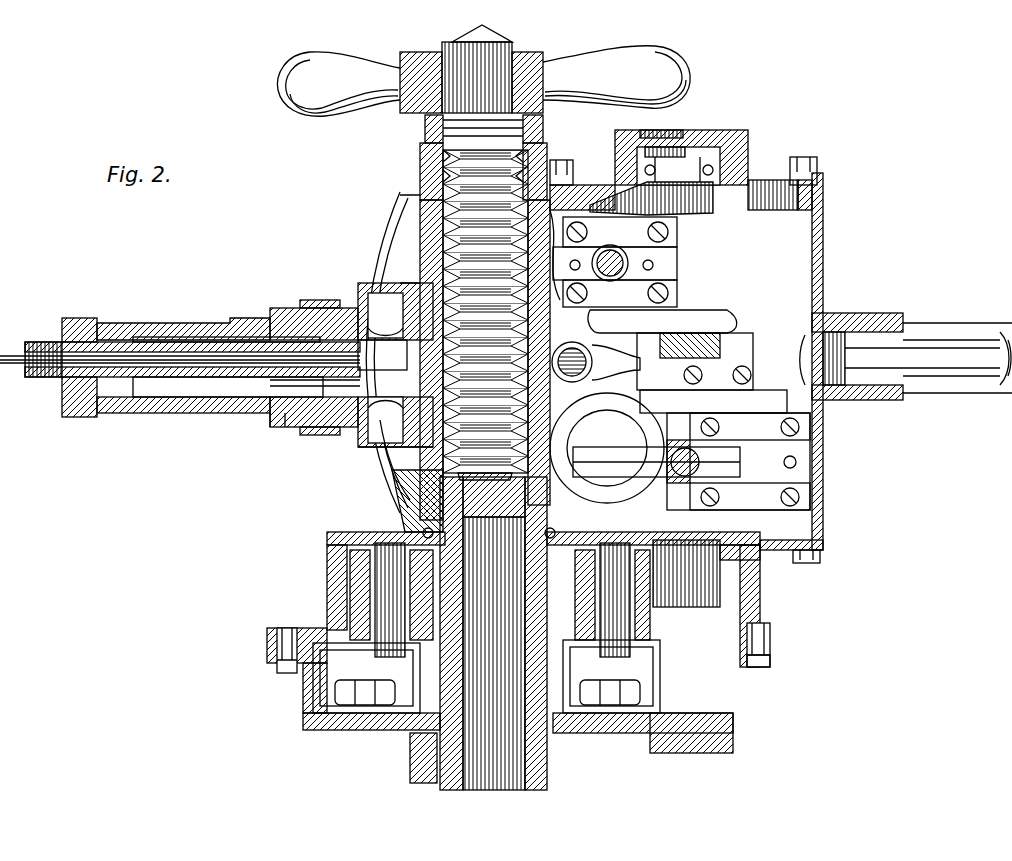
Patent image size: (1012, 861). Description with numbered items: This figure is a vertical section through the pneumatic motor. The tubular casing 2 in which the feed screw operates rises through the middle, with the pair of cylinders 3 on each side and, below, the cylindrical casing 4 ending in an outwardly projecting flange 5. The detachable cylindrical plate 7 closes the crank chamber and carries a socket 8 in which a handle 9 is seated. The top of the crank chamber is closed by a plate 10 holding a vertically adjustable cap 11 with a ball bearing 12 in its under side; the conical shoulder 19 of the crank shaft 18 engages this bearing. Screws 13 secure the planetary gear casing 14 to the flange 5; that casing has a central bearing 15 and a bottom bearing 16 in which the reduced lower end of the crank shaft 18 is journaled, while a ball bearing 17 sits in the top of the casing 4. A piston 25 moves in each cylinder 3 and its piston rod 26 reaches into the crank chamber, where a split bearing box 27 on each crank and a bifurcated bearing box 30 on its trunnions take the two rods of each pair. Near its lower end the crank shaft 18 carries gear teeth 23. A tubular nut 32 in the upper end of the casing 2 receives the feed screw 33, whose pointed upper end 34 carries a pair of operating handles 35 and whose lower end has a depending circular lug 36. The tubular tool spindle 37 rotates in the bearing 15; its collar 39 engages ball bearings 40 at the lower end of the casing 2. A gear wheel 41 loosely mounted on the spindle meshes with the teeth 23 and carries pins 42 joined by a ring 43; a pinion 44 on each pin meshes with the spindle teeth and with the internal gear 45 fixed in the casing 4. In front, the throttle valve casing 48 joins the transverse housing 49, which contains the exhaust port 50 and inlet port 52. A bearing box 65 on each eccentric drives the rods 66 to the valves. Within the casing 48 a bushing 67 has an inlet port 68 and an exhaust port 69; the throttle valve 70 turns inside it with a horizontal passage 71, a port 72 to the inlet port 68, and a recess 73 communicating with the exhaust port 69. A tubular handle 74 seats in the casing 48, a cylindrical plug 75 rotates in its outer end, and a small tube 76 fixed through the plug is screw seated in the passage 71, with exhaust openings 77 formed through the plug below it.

The tubular casing 2 is at (395, 245).
The cylinders 3 is at (958, 340).
The cylindrical casing 4 is at (340, 566).
The flange 5 is at (270, 643).
The cylindrical plate 7 is at (823, 215).
The socket 8 is at (855, 315).
The handle 9 is at (984, 382).
The plate 10 is at (760, 180).
The vertically adjustable cap 11 is at (690, 150).
The ball bearing 12 is at (735, 150).
The screws 13 is at (765, 665).
The planetary gear casing 14 is at (320, 730).
The bearing 15 is at (415, 752).
The bearing 16 is at (655, 740).
The ball bearing 17 is at (760, 570).
The crank shaft 18 is at (686, 573).
The conical shoulder 19 is at (670, 185).
The gear teeth 23 is at (720, 693).
The piston 25 is at (607, 448).
The piston rod 26 is at (620, 258).
The split bearing box 27 is at (640, 274).
The bifurcated bearing box 30 is at (686, 363).
The tubular nut 32 is at (438, 128).
The feed screw 33 is at (455, 160).
The pointed upper end 34 is at (492, 40).
The operating handles 35 is at (483, 81).
The depending circular lug 36 is at (400, 482).
The tubular tool spindle 37 is at (545, 750).
The collar 39 is at (420, 530).
The ball bearings 40 is at (415, 520).
The gear wheel 41 is at (330, 705).
The pins 42 is at (525, 628).
The ring 43 is at (350, 550).
The pinion 44 is at (395, 618).
The internal gear 45 is at (345, 600).
The throttle valve casing 48 is at (330, 447).
The transversely arranged housing 49 is at (360, 285).
The exhaust port 50 is at (458, 315).
The inlet port 52 is at (409, 239).
The bearing box 65 is at (810, 356).
The rods 66 is at (605, 322).
The bushing 67 is at (275, 428).
The inlet port 68 is at (385, 315).
The exhaust port 69 is at (385, 420).
The throttle valve 70 is at (310, 308).
The horizontal passage 71 is at (382, 355).
The port 72 is at (370, 318).
The recess 73 is at (345, 387).
The tubular handle 74 is at (215, 413).
The cylindrical plug 75 is at (75, 418).
The small tube 76 is at (180, 380).
The exhaust openings 77 is at (75, 360).